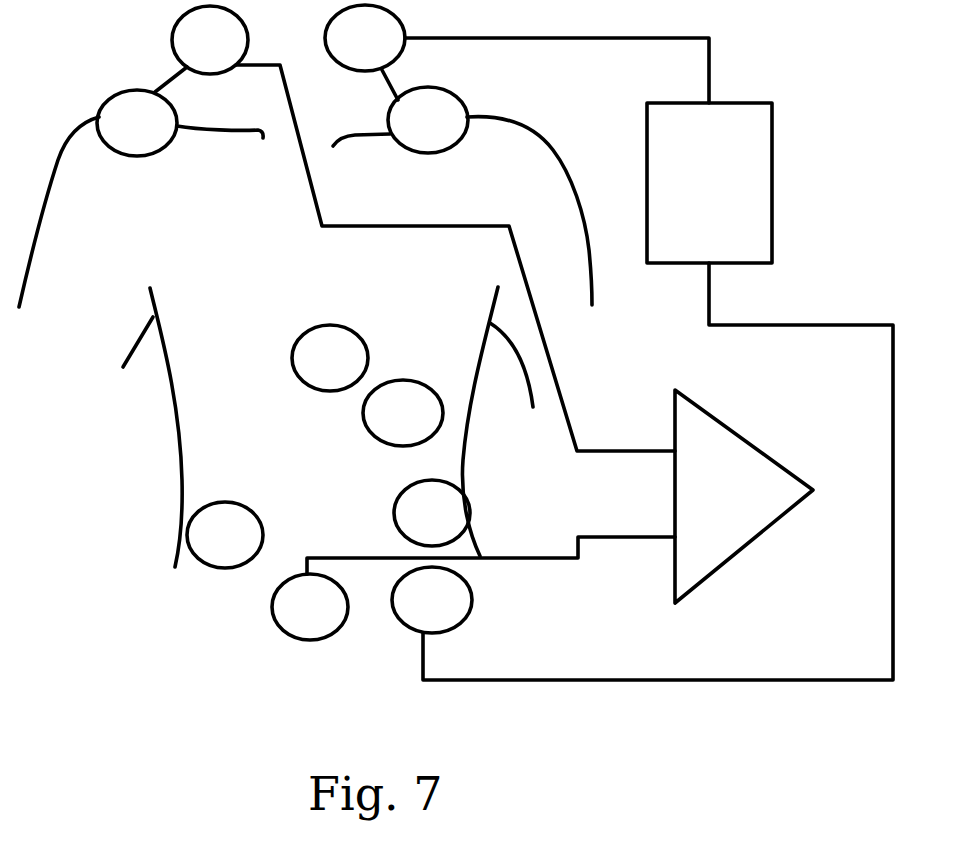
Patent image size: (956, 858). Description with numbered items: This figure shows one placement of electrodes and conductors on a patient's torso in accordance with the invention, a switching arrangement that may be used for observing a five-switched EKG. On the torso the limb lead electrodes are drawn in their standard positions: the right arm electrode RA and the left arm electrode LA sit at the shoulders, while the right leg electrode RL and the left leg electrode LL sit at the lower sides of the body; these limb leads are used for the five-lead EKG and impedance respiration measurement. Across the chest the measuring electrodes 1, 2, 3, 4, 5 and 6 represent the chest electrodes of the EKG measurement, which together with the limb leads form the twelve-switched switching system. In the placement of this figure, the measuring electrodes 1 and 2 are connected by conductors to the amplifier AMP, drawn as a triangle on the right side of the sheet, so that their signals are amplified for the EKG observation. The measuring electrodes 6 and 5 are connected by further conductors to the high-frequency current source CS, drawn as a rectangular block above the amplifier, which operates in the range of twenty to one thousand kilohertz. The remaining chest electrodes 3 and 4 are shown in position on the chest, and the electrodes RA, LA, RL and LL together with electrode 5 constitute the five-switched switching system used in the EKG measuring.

The measuring electrode V1 1 is at (210, 40).
The measuring electrode V2 2 is at (310, 607).
The measuring electrode V3 3 is at (330, 358).
The measuring electrode V4 4 is at (403, 413).
The measuring electrode V5 5 is at (432, 600).
The measuring electrode V6 6 is at (365, 38).
The right arm limb lead electrode RA is at (137, 123).
The left arm limb lead electrode LA is at (428, 120).
The left leg limb lead electrode LL is at (432, 513).
The right leg limb lead electrode RL is at (225, 535).
The high-frequency current source CS is at (772, 123).
The amplifier AMP is at (723, 417).